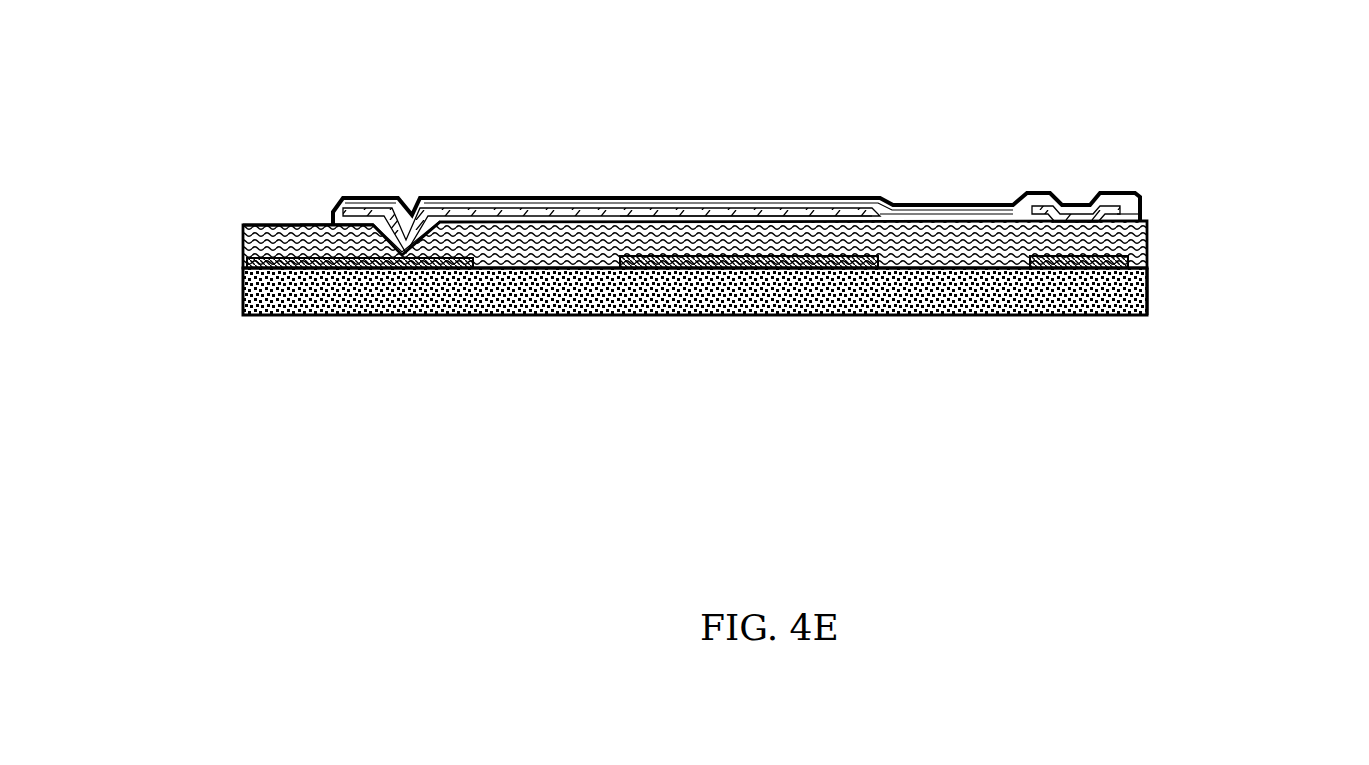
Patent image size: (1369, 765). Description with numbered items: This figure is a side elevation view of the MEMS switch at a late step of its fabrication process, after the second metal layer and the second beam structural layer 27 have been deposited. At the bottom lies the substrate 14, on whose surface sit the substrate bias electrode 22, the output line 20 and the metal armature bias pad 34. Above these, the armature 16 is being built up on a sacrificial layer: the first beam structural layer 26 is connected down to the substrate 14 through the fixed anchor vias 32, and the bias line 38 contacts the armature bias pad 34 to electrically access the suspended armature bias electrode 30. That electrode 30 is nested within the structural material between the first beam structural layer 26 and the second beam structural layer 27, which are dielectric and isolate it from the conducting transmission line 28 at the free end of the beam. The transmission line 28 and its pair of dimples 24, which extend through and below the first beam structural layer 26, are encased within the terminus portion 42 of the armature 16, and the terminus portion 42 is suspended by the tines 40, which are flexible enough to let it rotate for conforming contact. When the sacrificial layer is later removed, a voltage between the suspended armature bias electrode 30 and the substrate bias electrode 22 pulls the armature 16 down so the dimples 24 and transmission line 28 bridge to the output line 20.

The substrate 14 is at (307, 320).
The armature 16 is at (633, 192).
The output line 20 is at (1147, 305).
The substrate bias electrode 22 is at (700, 260).
The dimples 24 is at (1150, 240).
The first beam structural layer 26 is at (617, 225).
The second beam structural layer 27 is at (613, 195).
The conducting transmission line 28 is at (435, 193).
The suspended armature bias electrode 30 is at (657, 210).
The fixed anchor vias 32 is at (313, 223).
The armature bias pad 34 is at (233, 240).
The bias line 38 is at (537, 195).
The tines 40 is at (1030, 258).
The terminus portion 42 is at (1142, 163).